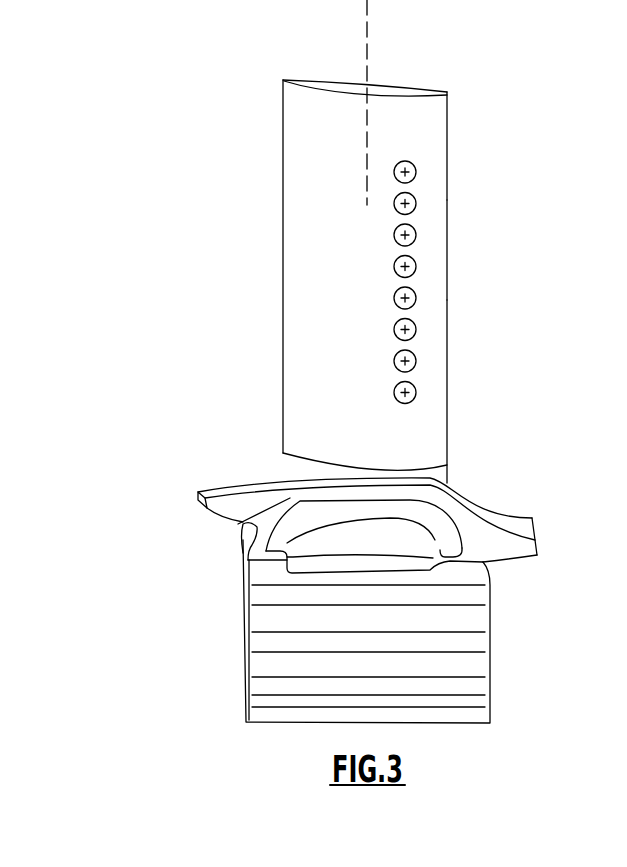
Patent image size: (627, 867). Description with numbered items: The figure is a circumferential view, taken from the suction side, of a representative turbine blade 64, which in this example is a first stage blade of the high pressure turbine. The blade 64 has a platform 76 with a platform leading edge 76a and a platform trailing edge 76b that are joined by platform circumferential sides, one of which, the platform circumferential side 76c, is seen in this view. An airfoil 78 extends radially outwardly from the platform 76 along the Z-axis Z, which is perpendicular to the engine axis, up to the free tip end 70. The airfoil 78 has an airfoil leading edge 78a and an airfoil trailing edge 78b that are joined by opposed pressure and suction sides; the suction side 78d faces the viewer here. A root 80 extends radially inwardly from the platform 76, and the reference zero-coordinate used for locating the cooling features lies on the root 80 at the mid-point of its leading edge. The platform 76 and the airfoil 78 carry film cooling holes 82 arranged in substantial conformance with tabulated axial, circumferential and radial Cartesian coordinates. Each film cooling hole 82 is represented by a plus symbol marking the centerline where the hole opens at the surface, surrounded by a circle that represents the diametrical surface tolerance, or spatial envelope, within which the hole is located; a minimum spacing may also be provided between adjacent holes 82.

The Z-axis Z is at (367, 33).
The turbine blade 64 is at (138, 521).
The free tip end 70 is at (377, 90).
The platform 76 is at (367, 541).
The platform leading edge 76a is at (537, 543).
The platform trailing edge 76b is at (197, 496).
The platform circumferential side 76c is at (240, 527).
The airfoil 78 is at (370, 269).
The airfoil leading edge 78a is at (447, 388).
The airfoil trailing edge 78b is at (283, 265).
The suction side 78d is at (428, 137).
The root 80 is at (496, 659).
The film cooling holes 82 is at (421, 302).